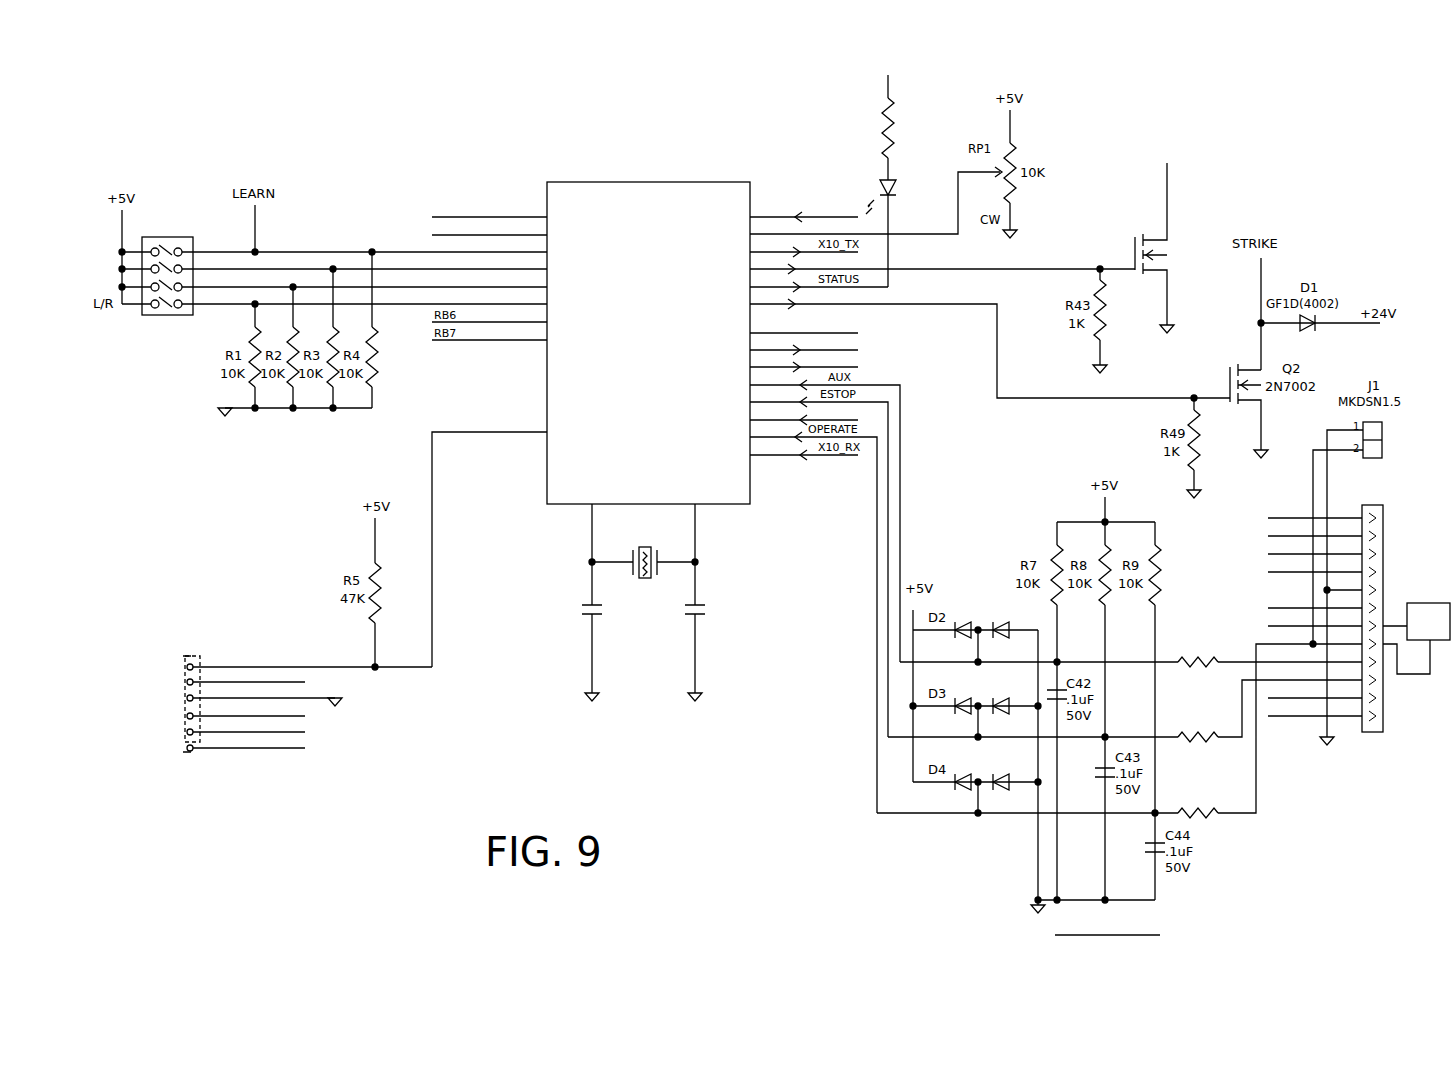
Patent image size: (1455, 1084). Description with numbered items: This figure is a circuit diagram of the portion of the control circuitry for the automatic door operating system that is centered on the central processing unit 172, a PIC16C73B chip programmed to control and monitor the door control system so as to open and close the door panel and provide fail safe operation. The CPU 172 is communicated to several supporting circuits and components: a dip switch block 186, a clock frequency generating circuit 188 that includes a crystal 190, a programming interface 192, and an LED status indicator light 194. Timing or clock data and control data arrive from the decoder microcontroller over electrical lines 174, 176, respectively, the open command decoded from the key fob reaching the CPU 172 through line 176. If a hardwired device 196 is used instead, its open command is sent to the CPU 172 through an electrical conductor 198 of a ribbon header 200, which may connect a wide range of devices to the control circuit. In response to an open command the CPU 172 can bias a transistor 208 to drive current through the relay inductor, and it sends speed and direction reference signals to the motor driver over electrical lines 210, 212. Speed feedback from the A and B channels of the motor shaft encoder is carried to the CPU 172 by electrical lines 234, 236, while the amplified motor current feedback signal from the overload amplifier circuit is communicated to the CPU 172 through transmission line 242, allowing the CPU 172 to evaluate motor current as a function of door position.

The central processing unit 172 is at (591, 192).
The electrical line 174 is at (858, 333).
The electrical line 176 is at (860, 422).
The dip switch block 186 is at (169, 312).
The clock frequency generating circuit 188 is at (628, 602).
The crystal 190 is at (650, 548).
The programming interface 192 is at (166, 677).
The LED status indicator light 194 is at (880, 187).
The hardwired device 196 is at (1448, 636).
The electrical conductor 198 is at (1258, 783).
The ribbon header 200 is at (1372, 733).
The transistor 208 is at (1188, 225).
The electrical line 210 is at (858, 364).
The electrical line 212 is at (858, 347).
The electrical line 234 is at (487, 214).
The electrical line 236 is at (503, 233).
The transmission line 242 is at (812, 214).